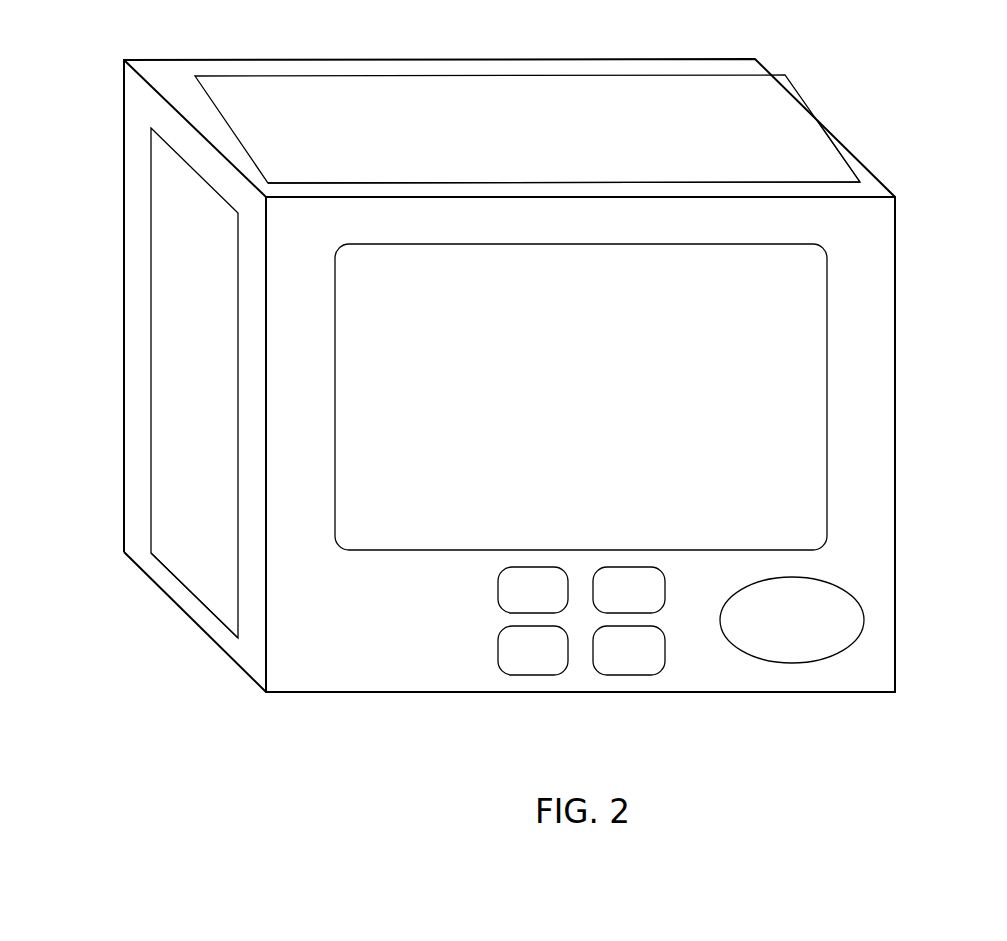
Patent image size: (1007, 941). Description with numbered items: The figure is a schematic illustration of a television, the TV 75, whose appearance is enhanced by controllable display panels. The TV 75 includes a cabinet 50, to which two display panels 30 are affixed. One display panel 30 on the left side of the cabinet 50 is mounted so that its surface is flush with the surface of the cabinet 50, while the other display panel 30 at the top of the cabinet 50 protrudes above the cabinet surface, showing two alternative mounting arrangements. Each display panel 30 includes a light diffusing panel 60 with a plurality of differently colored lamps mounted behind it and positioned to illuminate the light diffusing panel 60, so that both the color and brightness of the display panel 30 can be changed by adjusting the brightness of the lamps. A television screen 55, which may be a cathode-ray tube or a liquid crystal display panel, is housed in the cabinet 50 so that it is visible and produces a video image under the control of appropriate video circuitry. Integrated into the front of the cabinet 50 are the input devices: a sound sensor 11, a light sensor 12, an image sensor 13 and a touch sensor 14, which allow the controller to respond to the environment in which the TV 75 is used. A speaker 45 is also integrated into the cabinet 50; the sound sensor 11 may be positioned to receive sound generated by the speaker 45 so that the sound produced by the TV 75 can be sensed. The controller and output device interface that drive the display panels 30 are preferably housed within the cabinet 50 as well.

The TV 75 is at (212, 682).
The display panel 30 is at (505, 356).
The light diffusing panel 60 is at (542, 148).
The cabinet 50 is at (580, 444).
The television screen 55 is at (581, 397).
The sound sensor 11 is at (533, 590).
The light sensor 12 is at (629, 590).
The image sensor 13 is at (533, 650).
The touch sensor 14 is at (629, 650).
The speaker 45 is at (792, 620).